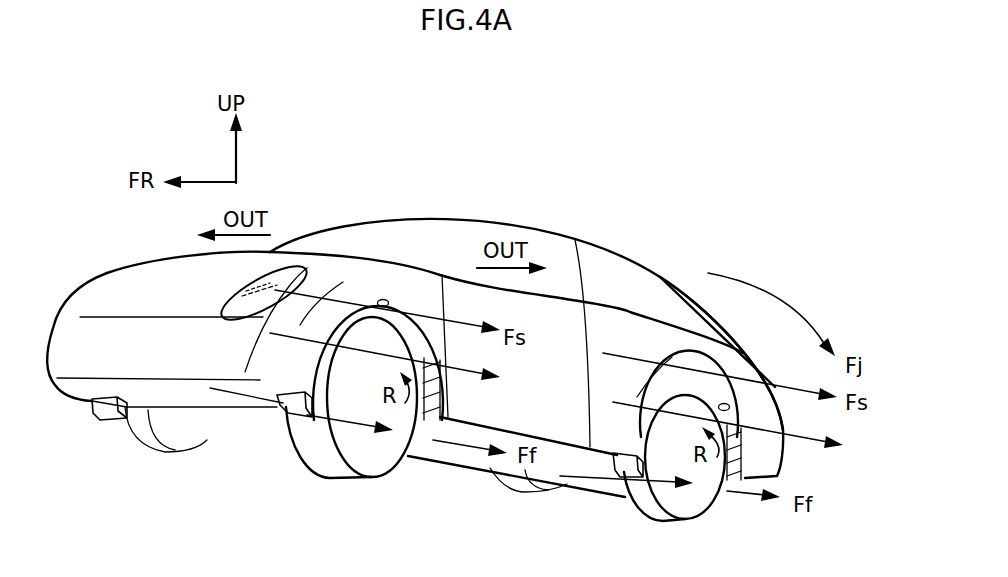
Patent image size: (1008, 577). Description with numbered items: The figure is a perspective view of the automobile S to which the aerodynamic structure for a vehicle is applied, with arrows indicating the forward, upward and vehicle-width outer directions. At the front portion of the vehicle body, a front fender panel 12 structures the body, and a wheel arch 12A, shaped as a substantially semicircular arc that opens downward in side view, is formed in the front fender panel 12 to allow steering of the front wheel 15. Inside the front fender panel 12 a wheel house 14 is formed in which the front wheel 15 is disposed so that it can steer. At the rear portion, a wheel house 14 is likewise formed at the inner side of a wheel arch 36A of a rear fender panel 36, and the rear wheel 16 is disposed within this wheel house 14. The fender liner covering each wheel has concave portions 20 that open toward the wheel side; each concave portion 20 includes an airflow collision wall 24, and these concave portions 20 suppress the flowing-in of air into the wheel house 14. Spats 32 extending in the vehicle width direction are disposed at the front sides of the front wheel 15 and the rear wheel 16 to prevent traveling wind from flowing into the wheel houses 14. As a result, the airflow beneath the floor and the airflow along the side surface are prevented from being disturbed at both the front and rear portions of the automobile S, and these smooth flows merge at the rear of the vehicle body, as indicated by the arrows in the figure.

The front fender panel 12 is at (363, 288).
The wheel arch 12A is at (385, 300).
The wheel house 14 is at (415, 327).
The front wheel 15 is at (180, 443).
The rear wheel 16 is at (523, 483).
The concave portion 20 is at (437, 383).
The airflow collision wall 24 is at (437, 356).
The spat 32 is at (108, 421).
The rear fender panel 36 is at (697, 353).
The wheel arch 36A is at (729, 406).
The automobile S is at (608, 240).